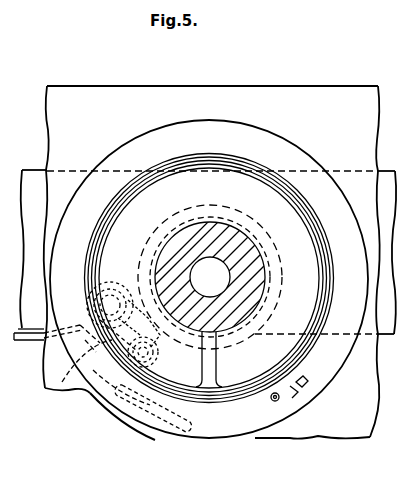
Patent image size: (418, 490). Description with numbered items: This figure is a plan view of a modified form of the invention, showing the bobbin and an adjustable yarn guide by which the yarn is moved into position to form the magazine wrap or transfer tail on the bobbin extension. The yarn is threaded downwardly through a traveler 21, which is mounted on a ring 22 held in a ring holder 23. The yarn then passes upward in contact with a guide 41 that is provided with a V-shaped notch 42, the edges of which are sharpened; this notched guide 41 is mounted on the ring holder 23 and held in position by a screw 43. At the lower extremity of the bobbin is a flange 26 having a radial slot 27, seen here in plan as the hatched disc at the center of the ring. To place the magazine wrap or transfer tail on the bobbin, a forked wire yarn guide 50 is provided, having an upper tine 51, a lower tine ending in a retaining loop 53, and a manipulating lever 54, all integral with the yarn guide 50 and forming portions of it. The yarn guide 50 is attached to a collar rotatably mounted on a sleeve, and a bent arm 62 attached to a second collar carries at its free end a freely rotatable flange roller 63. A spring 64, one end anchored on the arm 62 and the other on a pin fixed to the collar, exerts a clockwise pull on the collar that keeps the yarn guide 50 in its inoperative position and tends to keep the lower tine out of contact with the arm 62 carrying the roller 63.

The traveler 21 is at (203, 388).
The ring 22 is at (218, 394).
The ring holder 23 is at (140, 147).
The flange 26 is at (294, 231).
The radial slot 27 is at (210, 364).
The guide 41 is at (306, 380).
The V-shaped notch 42 is at (300, 392).
The screw 43 is at (278, 401).
The forked wire yarn guide 50 is at (72, 356).
The upper tine 51 is at (151, 428).
The retaining loop 53 is at (118, 425).
The manipulating lever 54 is at (24, 341).
The bent arm 62 is at (93, 398).
The flange roller 63 is at (146, 351).
The spring 64 is at (130, 290).